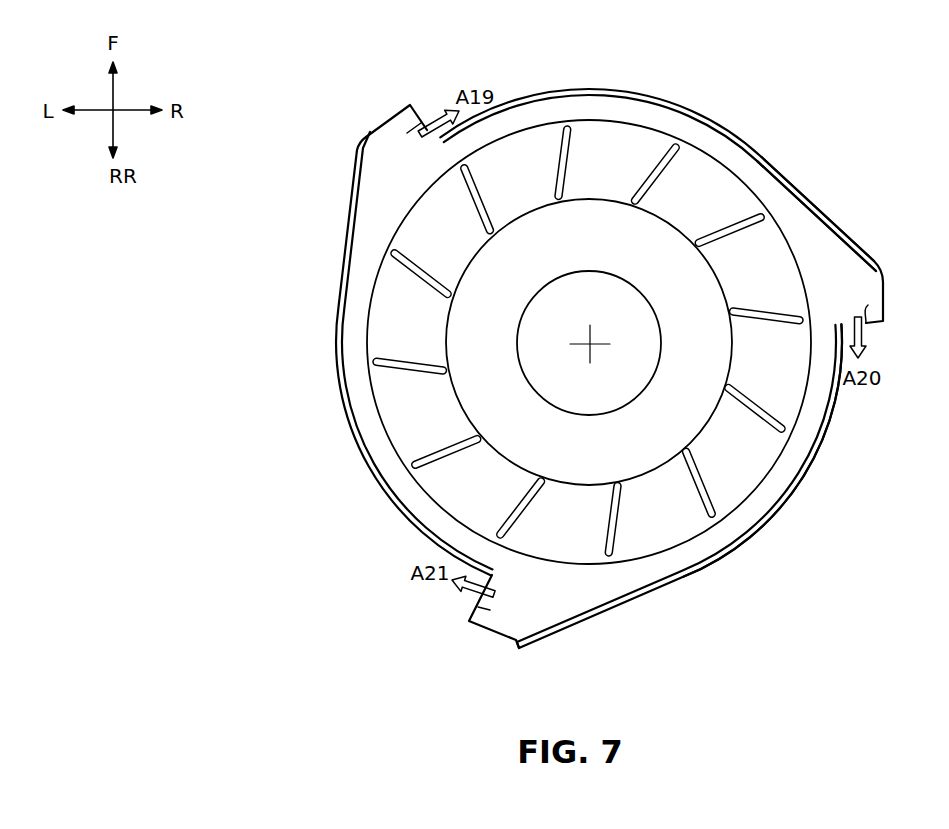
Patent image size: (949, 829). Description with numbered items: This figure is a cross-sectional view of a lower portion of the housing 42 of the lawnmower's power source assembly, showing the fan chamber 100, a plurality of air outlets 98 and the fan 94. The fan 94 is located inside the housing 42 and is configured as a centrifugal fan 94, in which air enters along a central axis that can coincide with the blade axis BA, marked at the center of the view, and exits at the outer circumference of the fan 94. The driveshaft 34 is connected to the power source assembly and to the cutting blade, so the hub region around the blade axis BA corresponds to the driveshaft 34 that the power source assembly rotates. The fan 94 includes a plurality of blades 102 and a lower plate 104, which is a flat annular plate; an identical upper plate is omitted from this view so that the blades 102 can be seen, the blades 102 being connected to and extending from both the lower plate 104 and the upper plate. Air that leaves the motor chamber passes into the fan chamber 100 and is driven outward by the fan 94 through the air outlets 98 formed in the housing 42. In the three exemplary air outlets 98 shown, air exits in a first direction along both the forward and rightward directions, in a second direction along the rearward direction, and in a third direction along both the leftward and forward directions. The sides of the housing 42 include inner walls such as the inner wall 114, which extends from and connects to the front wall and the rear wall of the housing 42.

The driveshaft 34 is at (619, 406).
The housing 42 is at (745, 140).
The fan 94 is at (793, 247).
The air outlet 98 is at (427, 113).
The fan chamber 100 is at (793, 457).
The blade 102 is at (574, 153).
The lower plate 104 is at (396, 318).
The inner wall 114 is at (775, 525).
The blade axis BA is at (591, 344).